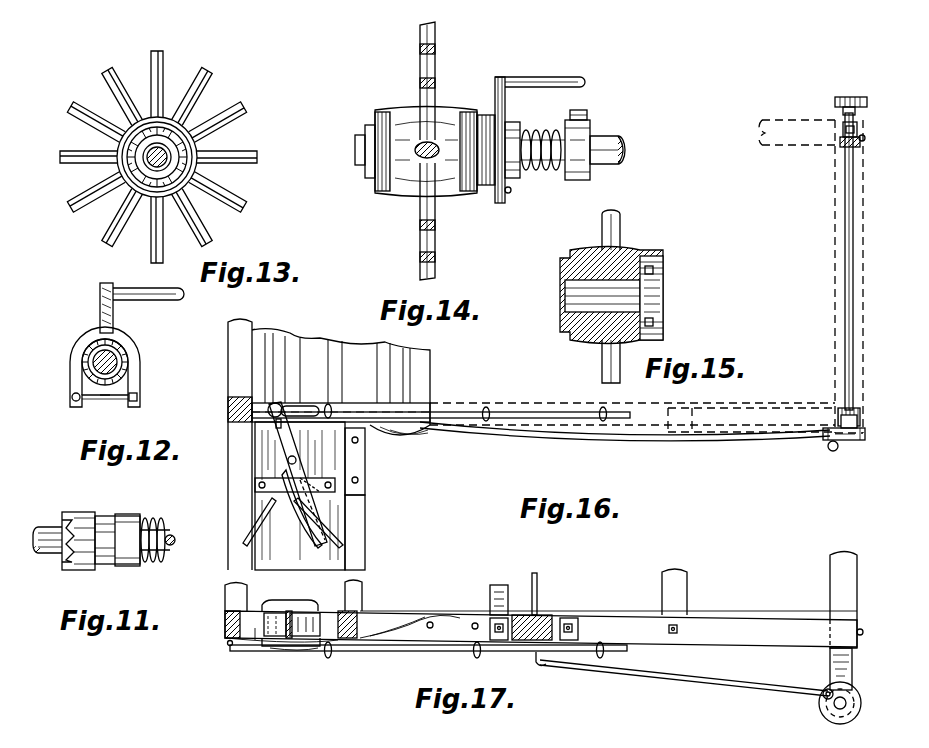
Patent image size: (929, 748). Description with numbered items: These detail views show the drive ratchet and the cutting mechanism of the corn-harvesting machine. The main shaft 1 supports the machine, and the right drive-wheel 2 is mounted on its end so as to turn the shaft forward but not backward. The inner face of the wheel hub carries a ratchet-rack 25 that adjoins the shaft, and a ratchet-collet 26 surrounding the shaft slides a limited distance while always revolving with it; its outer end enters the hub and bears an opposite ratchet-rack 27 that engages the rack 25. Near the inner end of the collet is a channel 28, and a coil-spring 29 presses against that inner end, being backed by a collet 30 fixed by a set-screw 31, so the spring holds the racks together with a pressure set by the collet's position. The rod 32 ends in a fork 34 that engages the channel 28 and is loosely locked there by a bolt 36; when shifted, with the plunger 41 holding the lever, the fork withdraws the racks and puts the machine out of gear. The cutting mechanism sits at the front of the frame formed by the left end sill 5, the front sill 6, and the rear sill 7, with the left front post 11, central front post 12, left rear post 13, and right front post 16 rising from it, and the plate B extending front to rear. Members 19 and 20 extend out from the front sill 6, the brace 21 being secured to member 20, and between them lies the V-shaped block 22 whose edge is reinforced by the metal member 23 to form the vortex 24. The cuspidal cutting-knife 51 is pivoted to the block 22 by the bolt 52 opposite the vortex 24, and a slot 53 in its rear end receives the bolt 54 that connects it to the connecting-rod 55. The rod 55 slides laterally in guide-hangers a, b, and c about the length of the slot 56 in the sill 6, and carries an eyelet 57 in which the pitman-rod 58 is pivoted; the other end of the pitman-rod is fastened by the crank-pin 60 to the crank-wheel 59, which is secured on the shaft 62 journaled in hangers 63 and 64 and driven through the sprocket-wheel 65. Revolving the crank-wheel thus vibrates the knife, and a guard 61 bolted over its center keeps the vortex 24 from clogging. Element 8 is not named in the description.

In FIG. 13, the main shaft 1 is at (140, 162).
In FIG. 12, the main shaft 1 is at (92, 370).
In FIG. 14, the main shaft 1 is at (364, 148).
In FIG. 14, the right drive-wheel 2 is at (418, 38).
In FIG. 16, the left end sill 5 is at (864, 288).
In FIG. 16, the front sill 6 is at (467, 402).
In FIG. 17, the front sill 6 is at (612, 618).
In FIG. 16, the rear sill 7 is at (778, 125).
In FIG. 17, the block 8 is at (546, 616).
In FIG. 16, the left front post 11 is at (858, 418).
In FIG. 17, the left front post 11 is at (852, 568).
In FIG. 16, the central front post 12 is at (680, 420).
In FIG. 17, the central front post 12 is at (688, 575).
In FIG. 16, the left rear post 13 is at (860, 128).
In FIG. 17, the left rear post 13 is at (538, 582).
In FIG. 16, the right front post 16 is at (227, 410).
In FIG. 17, the right front post 16 is at (226, 590).
In FIG. 16, the member 19 is at (228, 508).
In FIG. 17, the member 19 is at (225, 626).
In FIG. 16, the member 20 is at (365, 528).
In FIG. 17, the member 20 is at (365, 612).
In FIG. 13, the brace 21 is at (237, 108).
In FIG. 15, the brace 21 is at (622, 216).
In FIG. 16, the brace 21 is at (365, 465).
In FIG. 17, the brace 21 is at (362, 590).
In FIG. 16, the V-shaped block 22 is at (255, 468).
In FIG. 16, the metal member 23 is at (255, 535).
In FIG. 17, the metal member 23 is at (340, 608).
In FIG. 16, the vortex 24 is at (296, 505).
In FIG. 17, the vortex 24 is at (285, 637).
In FIG. 13, the ratchet-rack 25 is at (150, 185).
In FIG. 15, the ratchet-rack 25 is at (663, 296).
In FIG. 11, the ratchet-collet 26 is at (90, 512).
In FIG. 14, the ratchet-collet 26 is at (486, 186).
In FIG. 12, the ratchet-rack 27 is at (125, 350).
In FIG. 11, the ratchet-rack 27 is at (66, 565).
In FIG. 11, the channel 28 is at (105, 566).
In FIG. 14, the channel 28 is at (493, 118).
In FIG. 11, the coil-spring 29 is at (149, 517).
In FIG. 14, the coil-spring 29 is at (545, 172).
In FIG. 14, the collet 30 is at (590, 178).
In FIG. 14, the set-screw 31 is at (585, 111).
In FIG. 14, the rod 32 is at (578, 76).
In FIG. 12, the fork 34 is at (142, 378).
In FIG. 14, the fork 34 is at (500, 204).
In FIG. 12, the bolt 36 is at (108, 402).
In FIG. 14, the bolt 36 is at (511, 193).
In FIG. 16, the plunger 41 is at (295, 476).
In FIG. 16, the cuspidal cutting-knife 51 is at (315, 520).
In FIG. 17, the cuspidal cutting-knife 51 is at (305, 613).
In FIG. 16, the bolt 52 is at (288, 449).
In FIG. 17, the bolt 52 is at (286, 613).
In FIG. 16, the slot 53 is at (281, 420).
In FIG. 16, the bolt 54 is at (270, 404).
In FIG. 16, the connecting-rod 55 is at (522, 419).
In FIG. 17, the connecting-rod 55 is at (410, 651).
In FIG. 16, the slot 56 is at (302, 406).
In FIG. 17, the eyelet 57 is at (542, 665).
In FIG. 16, the pitman-rod 58 is at (752, 435).
In FIG. 17, the pitman-rod 58 is at (742, 683).
In FIG. 16, the crank-wheel 59 is at (866, 440).
In FIG. 17, the crank-wheel 59 is at (862, 708).
In FIG. 16, the crank-pin 60 is at (833, 451).
In FIG. 17, the crank-pin 60 is at (825, 690).
In FIG. 17, the guard 61 is at (275, 600).
In FIG. 16, the shaft 62 is at (854, 230).
In FIG. 17, the shaft 62 is at (846, 700).
In FIG. 16, the hanger 63 is at (862, 146).
In FIG. 16, the hanger 64 is at (840, 412).
In FIG. 17, the hanger 64 is at (852, 670).
In FIG. 16, the sprocket-wheel 65 is at (866, 102).
In FIG. 16, the guide-hanger a is at (331, 404).
In FIG. 17, the guide-hanger a is at (328, 659).
In FIG. 16, the guide-hanger b is at (486, 406).
In FIG. 17, the guide-hanger b is at (477, 659).
In FIG. 16, the guide-hanger c is at (606, 407).
In FIG. 17, the guide-hanger c is at (604, 655).
In FIG. 17, the plate B is at (500, 585).